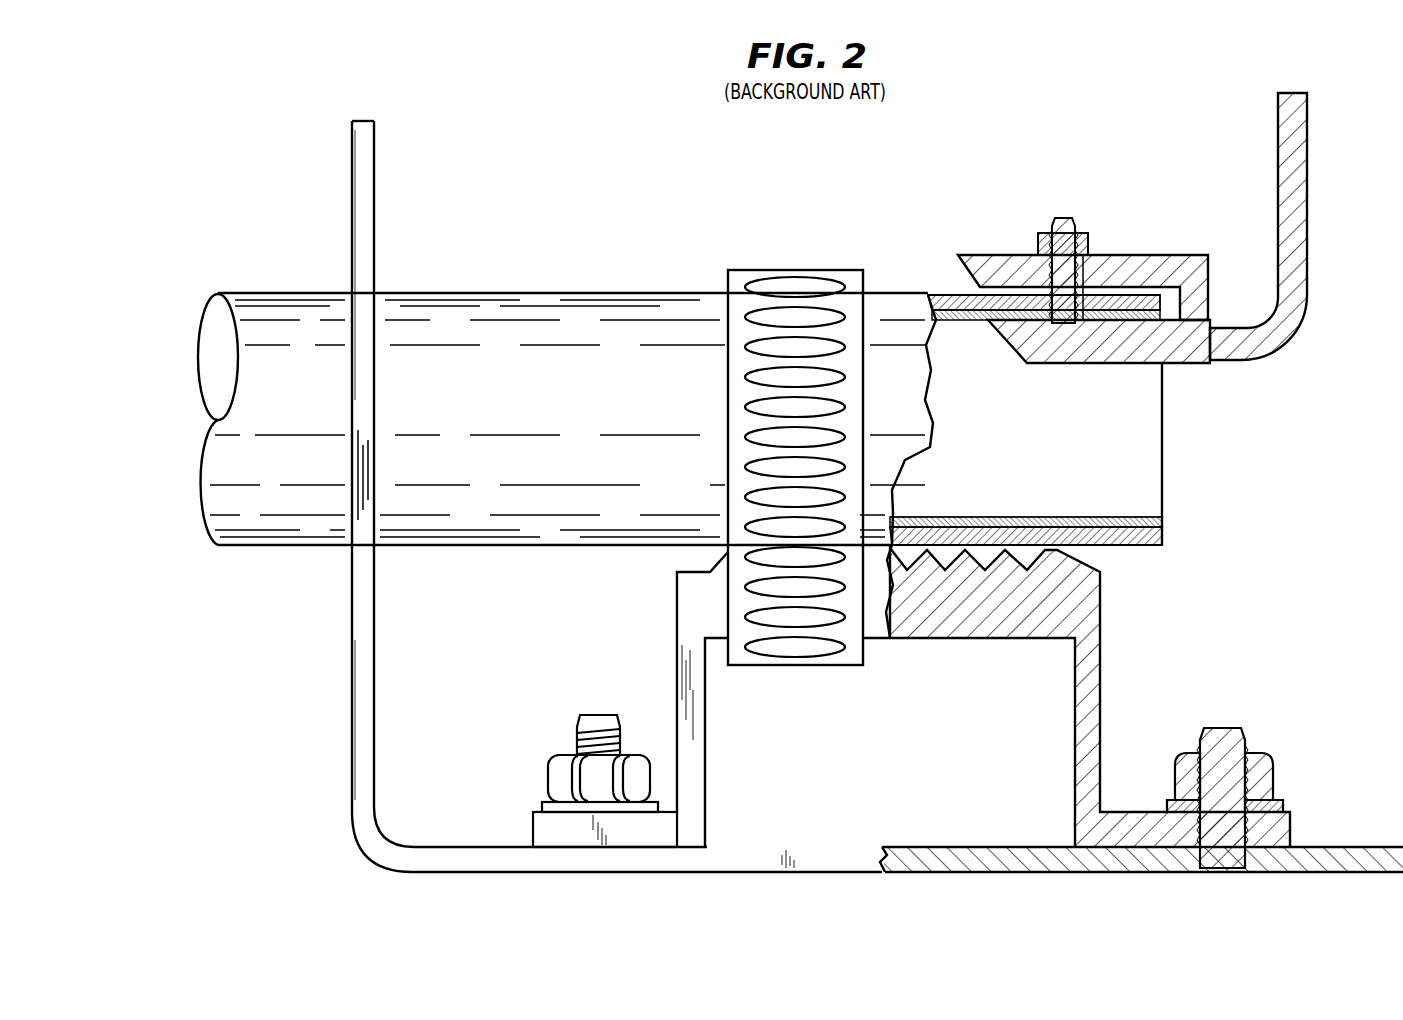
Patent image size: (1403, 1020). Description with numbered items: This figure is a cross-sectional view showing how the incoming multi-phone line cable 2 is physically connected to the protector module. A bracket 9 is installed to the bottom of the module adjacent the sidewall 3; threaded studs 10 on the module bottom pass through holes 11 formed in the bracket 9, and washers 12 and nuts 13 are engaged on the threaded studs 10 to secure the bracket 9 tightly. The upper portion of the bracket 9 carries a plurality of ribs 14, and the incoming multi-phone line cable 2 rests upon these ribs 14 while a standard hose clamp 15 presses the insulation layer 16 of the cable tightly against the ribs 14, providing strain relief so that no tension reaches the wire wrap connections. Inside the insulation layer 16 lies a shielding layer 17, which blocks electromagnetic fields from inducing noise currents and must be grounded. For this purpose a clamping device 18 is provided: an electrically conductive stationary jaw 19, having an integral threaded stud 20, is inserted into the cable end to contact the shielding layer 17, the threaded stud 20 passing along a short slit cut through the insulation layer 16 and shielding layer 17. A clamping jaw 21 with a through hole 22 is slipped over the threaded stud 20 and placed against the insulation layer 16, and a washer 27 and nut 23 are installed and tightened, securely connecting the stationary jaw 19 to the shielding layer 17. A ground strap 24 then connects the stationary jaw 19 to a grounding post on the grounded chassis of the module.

The incoming multi-phone line cable 2 is at (252, 293).
The sidewall 3 is at (375, 630).
The bracket 9 is at (677, 607).
The threaded studs 10 is at (597, 714).
The holes 11 is at (1185, 850).
The washers 12 is at (545, 806).
The nuts 13 is at (548, 772).
The ribs 14 is at (978, 517).
The hose clamp 15 is at (748, 270).
The insulation layer 16 is at (940, 296).
The shielding layer 17 is at (960, 322).
The clamping device 18 is at (1143, 170).
The stationary jaw 19 is at (1192, 362).
The threaded stud 20 is at (1058, 218).
The clamping jaw 21 is at (1188, 254).
The through hole 22 is at (1088, 284).
The nut 23 is at (1085, 233).
The ground strap 24 is at (1307, 230).
The washer 27 is at (1086, 268).